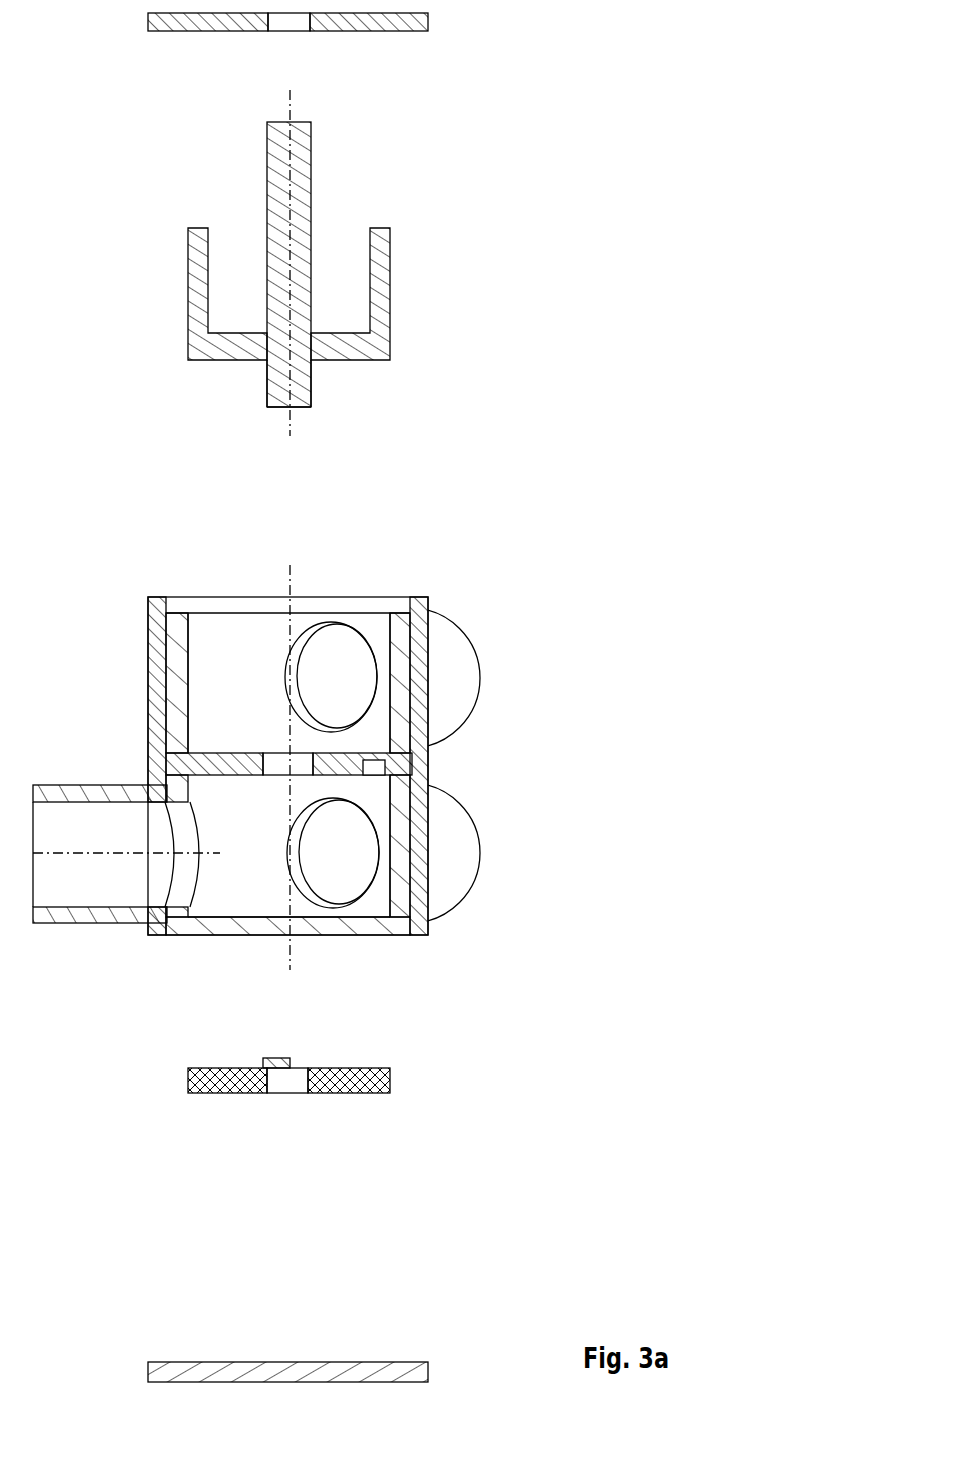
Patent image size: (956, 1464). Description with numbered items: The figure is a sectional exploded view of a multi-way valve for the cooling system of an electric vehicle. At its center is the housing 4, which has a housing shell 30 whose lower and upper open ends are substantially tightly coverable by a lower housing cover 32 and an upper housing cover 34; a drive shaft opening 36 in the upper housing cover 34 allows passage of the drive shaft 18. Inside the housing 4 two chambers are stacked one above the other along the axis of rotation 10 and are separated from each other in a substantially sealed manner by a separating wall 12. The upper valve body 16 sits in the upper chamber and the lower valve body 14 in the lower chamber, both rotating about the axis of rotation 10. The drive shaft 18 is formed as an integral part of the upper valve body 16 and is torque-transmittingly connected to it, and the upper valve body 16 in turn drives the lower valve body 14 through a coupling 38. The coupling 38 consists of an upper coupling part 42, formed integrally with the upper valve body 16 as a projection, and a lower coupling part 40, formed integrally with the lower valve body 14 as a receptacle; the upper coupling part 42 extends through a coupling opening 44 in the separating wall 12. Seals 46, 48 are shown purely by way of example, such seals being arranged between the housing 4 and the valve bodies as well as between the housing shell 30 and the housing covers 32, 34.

The upper housing cover 34 is at (428, 22).
The drive shaft opening 36 is at (300, 37).
The drive shaft 18 is at (311, 160).
The upper valve body 16 is at (390, 290).
The coupling 38 is at (445, 386).
The upper coupling part 42 is at (312, 393).
The axis of rotation 10 is at (300, 425).
The housing 4 is at (482, 587).
The housing shell 30 is at (420, 636).
The seal 46 is at (398, 673).
The separating wall 12 is at (345, 763).
The seal 48 is at (402, 810).
The coupling opening 44 is at (306, 790).
The lower coupling part 40 is at (303, 1057).
The lower valve body 14 is at (390, 1083).
The lower housing cover 32 is at (418, 1374).